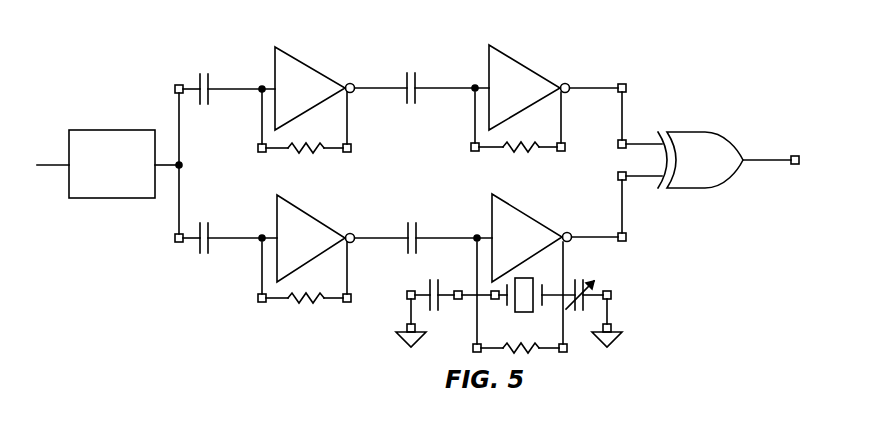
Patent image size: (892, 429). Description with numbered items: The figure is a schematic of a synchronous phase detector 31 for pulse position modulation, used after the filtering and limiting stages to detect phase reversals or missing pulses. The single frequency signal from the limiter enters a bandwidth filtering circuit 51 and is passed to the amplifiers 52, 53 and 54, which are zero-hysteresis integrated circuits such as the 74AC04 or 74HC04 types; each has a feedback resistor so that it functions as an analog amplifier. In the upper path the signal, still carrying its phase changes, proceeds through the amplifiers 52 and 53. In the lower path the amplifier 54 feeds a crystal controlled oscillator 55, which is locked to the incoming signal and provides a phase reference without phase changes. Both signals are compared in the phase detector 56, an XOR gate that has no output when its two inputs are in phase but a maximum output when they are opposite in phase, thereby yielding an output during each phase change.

The detector 31 is at (422, 199).
The bandwidth filtering circuit 51 is at (108, 164).
The amplifier 52 is at (332, 100).
The amplifier 53 is at (544, 98).
The amplifier 54 is at (333, 249).
The crystal controlled oscillator 55 is at (509, 273).
The phase detector 56 is at (728, 160).